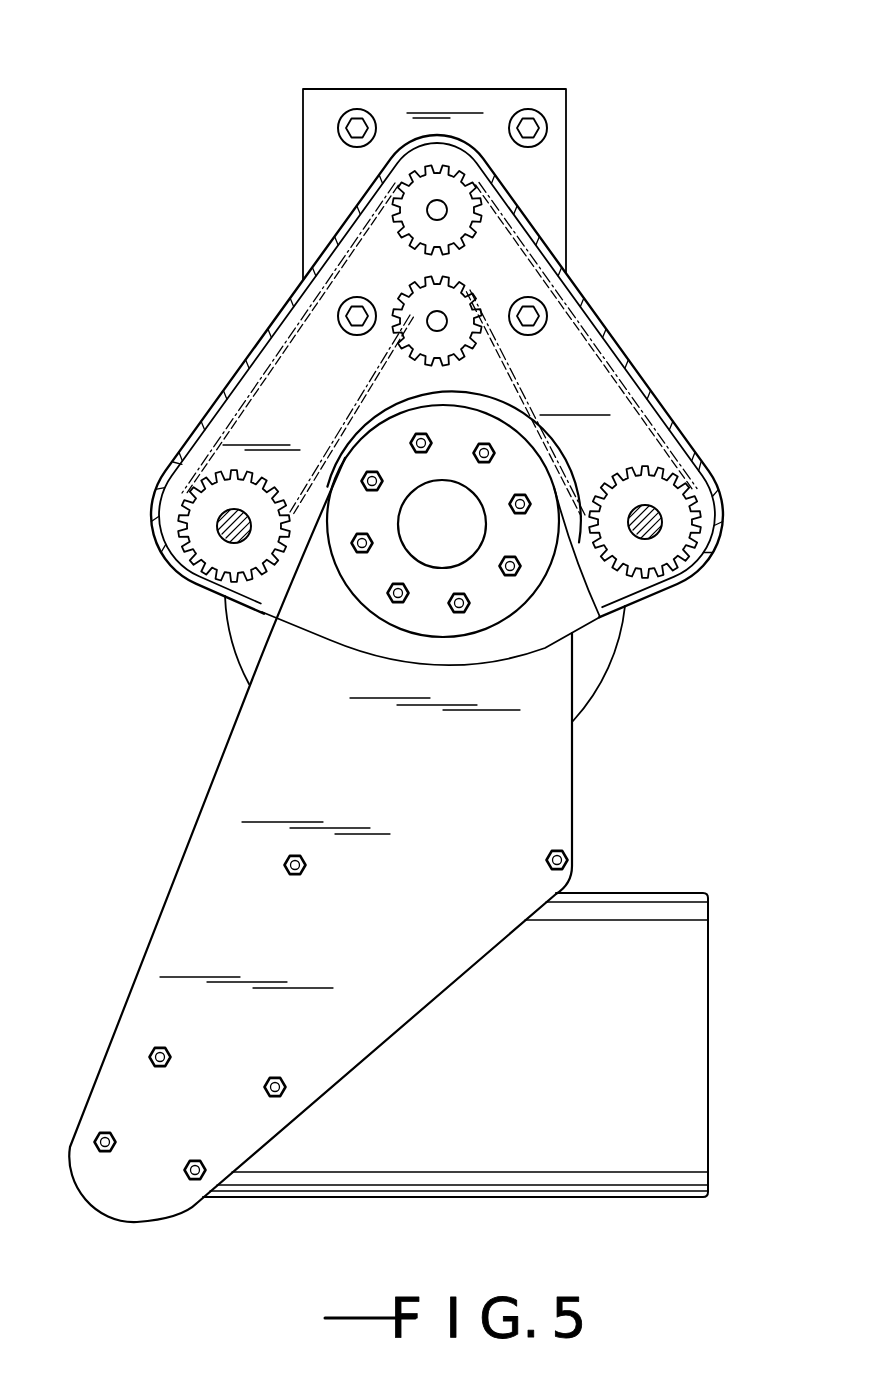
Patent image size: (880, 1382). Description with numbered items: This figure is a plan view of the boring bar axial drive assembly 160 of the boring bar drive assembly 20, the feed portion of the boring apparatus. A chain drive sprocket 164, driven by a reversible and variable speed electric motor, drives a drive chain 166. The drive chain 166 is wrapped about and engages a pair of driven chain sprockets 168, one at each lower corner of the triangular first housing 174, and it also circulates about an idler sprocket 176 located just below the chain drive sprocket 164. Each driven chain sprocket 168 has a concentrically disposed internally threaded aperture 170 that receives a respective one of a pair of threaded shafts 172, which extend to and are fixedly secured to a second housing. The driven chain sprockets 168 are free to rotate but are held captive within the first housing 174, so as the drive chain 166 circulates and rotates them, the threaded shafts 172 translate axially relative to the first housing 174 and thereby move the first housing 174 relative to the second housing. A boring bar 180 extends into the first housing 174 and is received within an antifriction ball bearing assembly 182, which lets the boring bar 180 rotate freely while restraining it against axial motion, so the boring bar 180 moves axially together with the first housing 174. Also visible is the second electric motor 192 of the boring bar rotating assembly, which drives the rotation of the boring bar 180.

The boring bar drive assembly 20 is at (726, 72).
The boring bar axial drive assembly 160 is at (208, 285).
The chain drive sprocket 164 is at (460, 198).
The idler sprocket 176 is at (470, 302).
The drive chain 166 is at (583, 353).
The first housing 174 is at (680, 433).
The threaded shafts 172 is at (660, 507).
The driven chain sprockets 168 is at (682, 525).
The internally threaded apertures 170 is at (661, 537).
The ball bearing assembly 182 is at (487, 587).
The boring bar 180 is at (440, 540).
The second electric motor 192 is at (600, 1082).